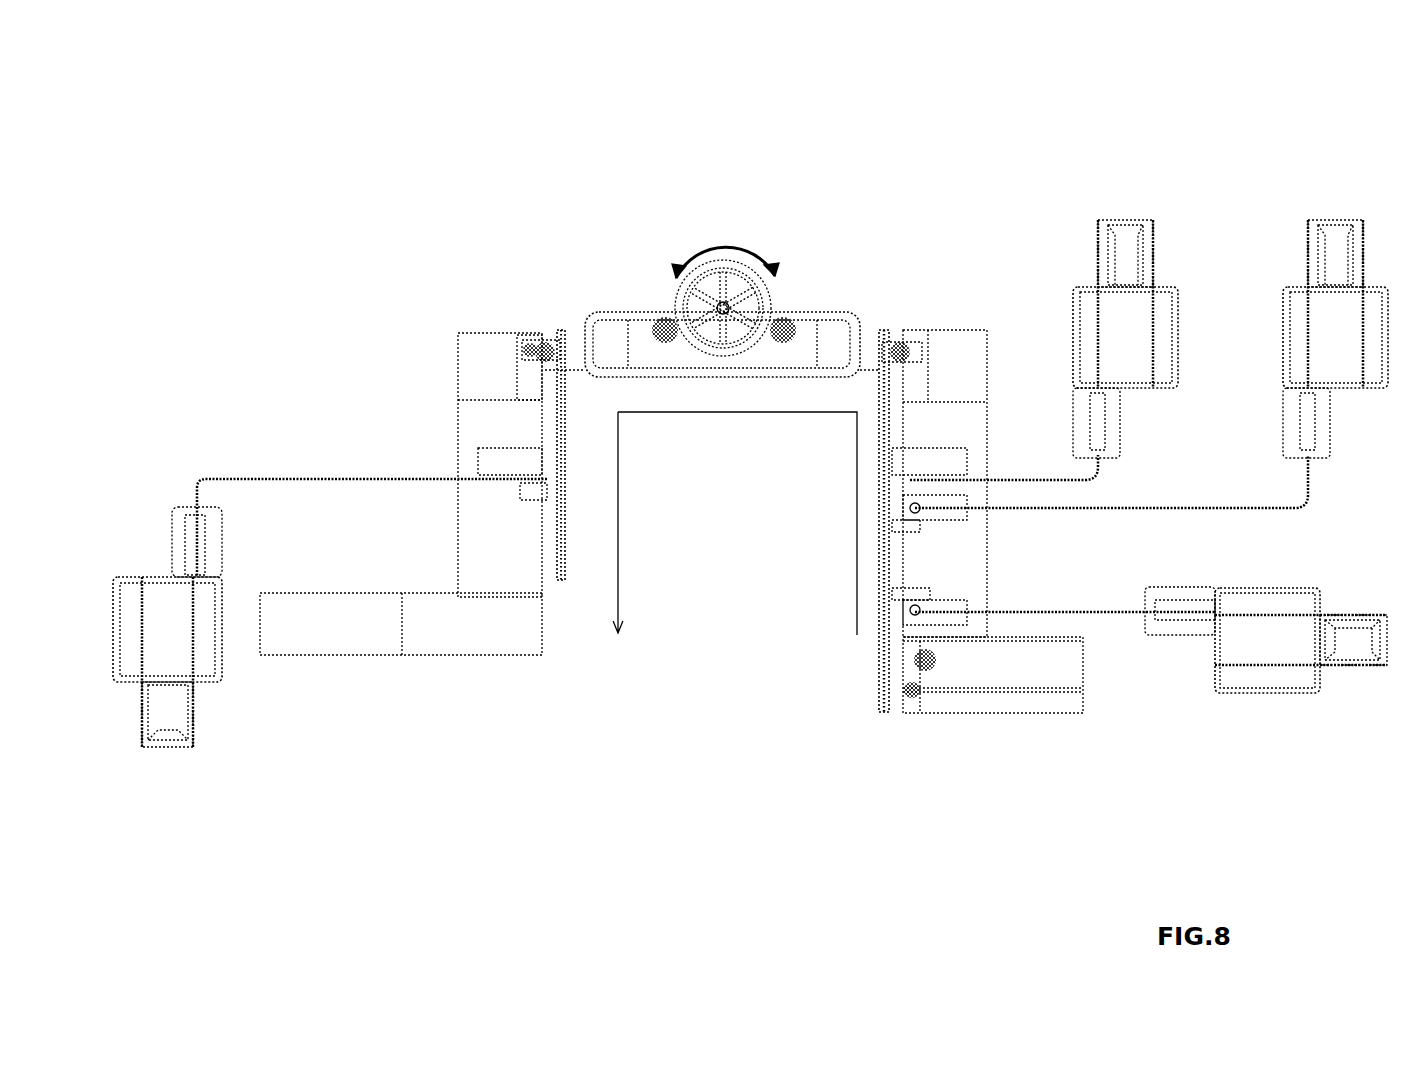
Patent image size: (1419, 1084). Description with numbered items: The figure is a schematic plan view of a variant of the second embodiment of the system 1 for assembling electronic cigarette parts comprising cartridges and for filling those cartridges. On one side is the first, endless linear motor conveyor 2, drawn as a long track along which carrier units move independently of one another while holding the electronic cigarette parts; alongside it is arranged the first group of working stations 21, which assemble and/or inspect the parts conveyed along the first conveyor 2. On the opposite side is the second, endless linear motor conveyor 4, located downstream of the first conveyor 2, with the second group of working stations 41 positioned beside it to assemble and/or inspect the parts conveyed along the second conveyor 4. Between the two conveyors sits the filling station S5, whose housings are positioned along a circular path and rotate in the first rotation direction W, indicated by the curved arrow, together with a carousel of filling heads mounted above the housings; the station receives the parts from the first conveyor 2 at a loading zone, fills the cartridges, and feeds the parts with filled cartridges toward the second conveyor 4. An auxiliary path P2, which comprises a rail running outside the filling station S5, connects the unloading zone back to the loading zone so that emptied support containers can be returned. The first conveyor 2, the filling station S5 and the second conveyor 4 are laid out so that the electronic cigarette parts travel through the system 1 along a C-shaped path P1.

The system 1 is at (526, 175).
The first endless linear motor conveyor 2 is at (887, 717).
The first group of working stations 21 is at (915, 570).
The second endless linear motor conveyor 4 is at (537, 413).
The second group of working stations 41 is at (516, 454).
The filling station S5 is at (706, 227).
The first rotation direction W is at (723, 288).
The C-shaped path P1 is at (735, 523).
The auxiliary path P2 is at (844, 295).